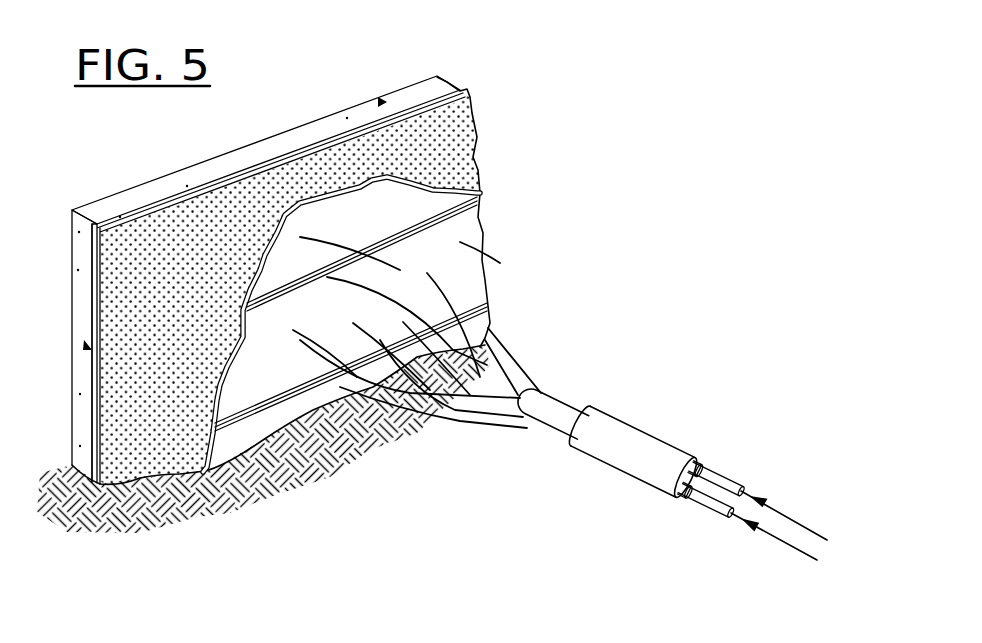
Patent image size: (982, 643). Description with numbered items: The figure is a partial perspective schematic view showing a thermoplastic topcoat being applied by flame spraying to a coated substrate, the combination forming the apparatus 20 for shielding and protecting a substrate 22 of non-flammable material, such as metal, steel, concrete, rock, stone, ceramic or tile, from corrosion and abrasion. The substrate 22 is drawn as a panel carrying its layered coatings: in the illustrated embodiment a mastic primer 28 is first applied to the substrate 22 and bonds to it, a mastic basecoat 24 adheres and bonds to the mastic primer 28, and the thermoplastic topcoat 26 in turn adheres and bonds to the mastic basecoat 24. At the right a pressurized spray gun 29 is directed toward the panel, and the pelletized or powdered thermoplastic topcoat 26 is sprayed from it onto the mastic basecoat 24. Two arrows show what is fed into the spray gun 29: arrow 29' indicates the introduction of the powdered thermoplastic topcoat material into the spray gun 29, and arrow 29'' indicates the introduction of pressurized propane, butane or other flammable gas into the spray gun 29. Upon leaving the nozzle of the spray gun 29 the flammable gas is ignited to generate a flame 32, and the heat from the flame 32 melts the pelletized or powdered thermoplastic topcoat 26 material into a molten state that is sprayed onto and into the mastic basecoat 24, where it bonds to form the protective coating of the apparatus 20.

The apparatus 20 is at (503, 208).
The substrate 22 is at (128, 198).
The mastic basecoat 24 is at (355, 124).
The thermoplastic topcoat 26 is at (462, 242).
The mastic primer 28 is at (311, 139).
The spray gun 29 is at (609, 440).
The arrow 29' is at (766, 512).
The arrow 29'' is at (769, 483).
The flame 32 is at (457, 420).